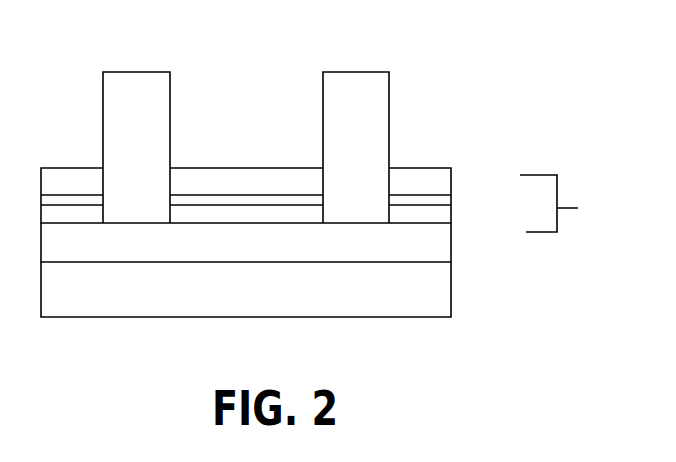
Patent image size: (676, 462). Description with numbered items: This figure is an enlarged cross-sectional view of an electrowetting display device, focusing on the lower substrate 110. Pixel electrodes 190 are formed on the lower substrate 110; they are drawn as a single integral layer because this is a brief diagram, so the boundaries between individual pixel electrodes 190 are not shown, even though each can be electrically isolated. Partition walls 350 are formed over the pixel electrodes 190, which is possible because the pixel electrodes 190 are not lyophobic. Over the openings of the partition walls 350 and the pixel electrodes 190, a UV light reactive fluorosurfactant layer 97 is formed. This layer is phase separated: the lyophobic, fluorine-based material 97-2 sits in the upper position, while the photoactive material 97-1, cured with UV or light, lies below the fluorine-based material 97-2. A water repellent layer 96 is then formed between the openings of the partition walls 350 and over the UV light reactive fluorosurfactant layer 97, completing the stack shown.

The lower substrate 110 is at (441, 290).
The pixel electrodes 190 is at (441, 250).
The photoactive material 97-1 is at (444, 216).
The lyophobic fluorine based material 97-2 is at (443, 194).
The UV light reactive fluorosurfactant layer 97 is at (573, 203).
The water repellent layer 96 is at (242, 168).
The partition walls 350 is at (137, 84).